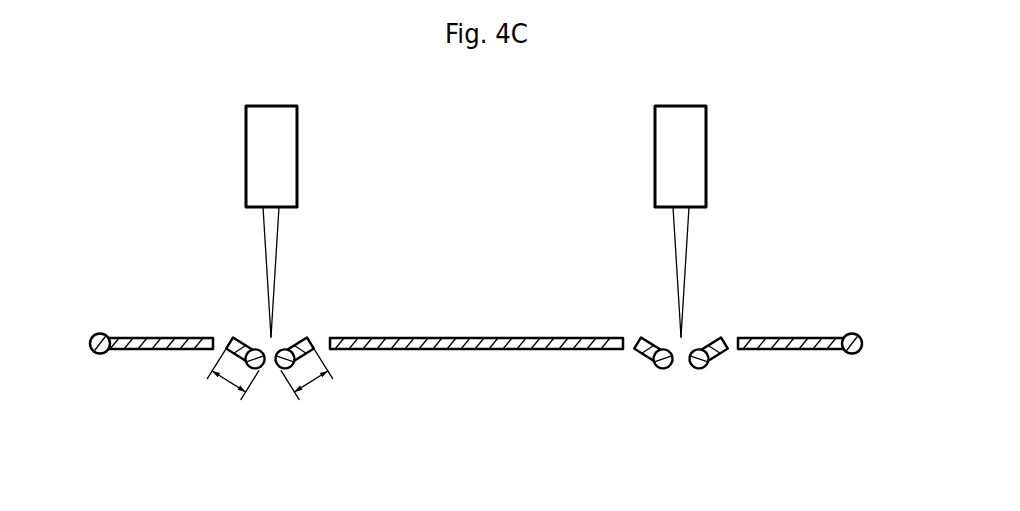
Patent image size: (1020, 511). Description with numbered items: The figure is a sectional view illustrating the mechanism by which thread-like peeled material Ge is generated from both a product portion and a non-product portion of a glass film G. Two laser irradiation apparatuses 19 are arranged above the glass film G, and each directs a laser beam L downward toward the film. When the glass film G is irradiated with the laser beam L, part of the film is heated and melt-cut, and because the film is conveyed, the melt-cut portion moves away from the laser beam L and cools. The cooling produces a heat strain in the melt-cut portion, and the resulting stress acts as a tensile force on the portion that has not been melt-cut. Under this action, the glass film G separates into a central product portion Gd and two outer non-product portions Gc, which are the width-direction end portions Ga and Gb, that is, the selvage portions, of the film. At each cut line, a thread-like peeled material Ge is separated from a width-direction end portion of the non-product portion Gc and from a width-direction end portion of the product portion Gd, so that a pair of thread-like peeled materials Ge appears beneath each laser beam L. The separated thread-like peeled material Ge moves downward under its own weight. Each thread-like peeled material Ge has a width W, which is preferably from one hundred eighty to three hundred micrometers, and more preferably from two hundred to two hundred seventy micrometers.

The laser irradiation apparatus 19 is at (297, 132).
The laser beam L is at (278, 255).
The glass film G is at (490, 302).
The product portion Gd is at (419, 336).
The non-product portion Gc is at (178, 336).
The end portion Ga is at (92, 337).
The end portion Gb is at (859, 334).
The thread-like peeled material Ge is at (244, 340).
The width W is at (229, 382).